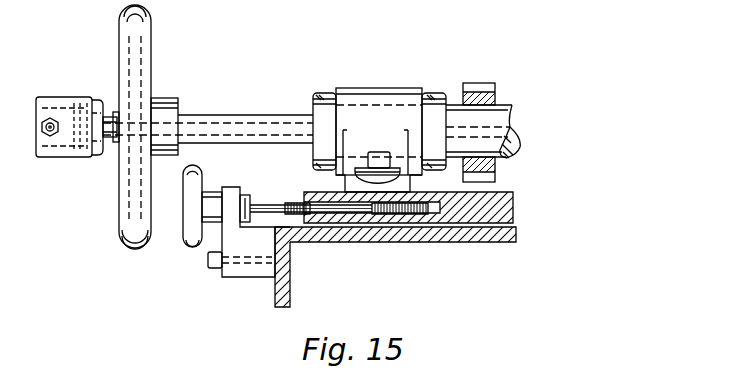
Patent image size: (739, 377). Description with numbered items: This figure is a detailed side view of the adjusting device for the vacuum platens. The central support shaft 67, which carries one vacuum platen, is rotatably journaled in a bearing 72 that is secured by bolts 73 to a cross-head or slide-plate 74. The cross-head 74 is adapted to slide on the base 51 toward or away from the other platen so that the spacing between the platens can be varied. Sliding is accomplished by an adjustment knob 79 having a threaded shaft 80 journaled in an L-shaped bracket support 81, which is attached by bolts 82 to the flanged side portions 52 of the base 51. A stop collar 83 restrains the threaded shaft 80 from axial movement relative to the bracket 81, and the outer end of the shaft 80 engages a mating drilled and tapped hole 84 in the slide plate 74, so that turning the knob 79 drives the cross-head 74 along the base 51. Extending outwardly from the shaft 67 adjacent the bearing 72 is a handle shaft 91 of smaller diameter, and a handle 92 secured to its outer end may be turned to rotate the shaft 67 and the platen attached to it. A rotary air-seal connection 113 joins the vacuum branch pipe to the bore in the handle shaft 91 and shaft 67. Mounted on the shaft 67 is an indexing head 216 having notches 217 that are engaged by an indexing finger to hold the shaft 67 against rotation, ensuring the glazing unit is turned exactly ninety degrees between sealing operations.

The rotary air-seal connection 113 is at (63, 106).
The handle 92 is at (143, 62).
The handle shaft 91 is at (248, 120).
The bearing 72 is at (392, 100).
The bolts 73 is at (388, 160).
The notches 217 is at (485, 90).
The indexing head 216 is at (497, 100).
The shaft 67 is at (508, 122).
The cross-head or slide-plate 74 is at (497, 210).
The drilled and tapped hole 84 is at (404, 214).
The threaded shaft 80 is at (262, 212).
The stop collar 83 is at (245, 205).
The L-shaped bracket support 81 is at (240, 245).
The adjustment knob 79 is at (193, 218).
The bolts 82 is at (208, 262).
The flanged side portions 52 is at (288, 277).
The base 51 is at (477, 236).